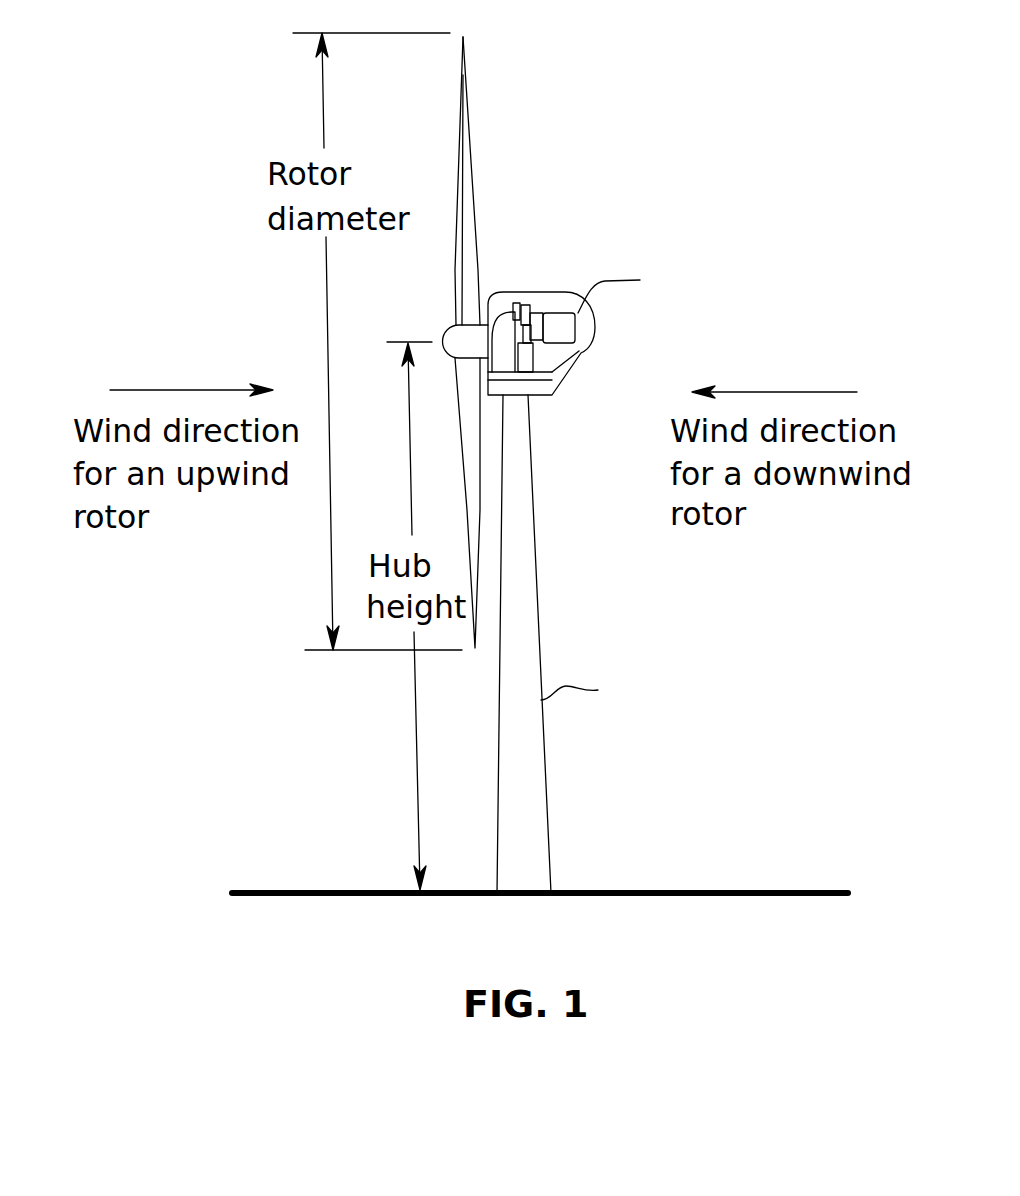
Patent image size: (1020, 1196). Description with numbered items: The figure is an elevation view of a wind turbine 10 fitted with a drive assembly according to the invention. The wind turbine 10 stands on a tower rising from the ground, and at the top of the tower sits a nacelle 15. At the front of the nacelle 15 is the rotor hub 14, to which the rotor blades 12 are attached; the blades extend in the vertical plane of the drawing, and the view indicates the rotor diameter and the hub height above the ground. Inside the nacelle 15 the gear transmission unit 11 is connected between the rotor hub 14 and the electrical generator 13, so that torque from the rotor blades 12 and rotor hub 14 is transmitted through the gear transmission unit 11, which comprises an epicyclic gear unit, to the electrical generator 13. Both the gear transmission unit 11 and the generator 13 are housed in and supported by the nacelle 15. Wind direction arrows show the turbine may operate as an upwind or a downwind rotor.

The wind turbine 10 is at (668, 160).
The gear transmission unit 11 is at (501, 292).
The rotor blades 12 is at (470, 148).
The electrical generator 13 is at (553, 313).
The rotor hub 14 is at (462, 342).
The nacelle 15 is at (595, 333).